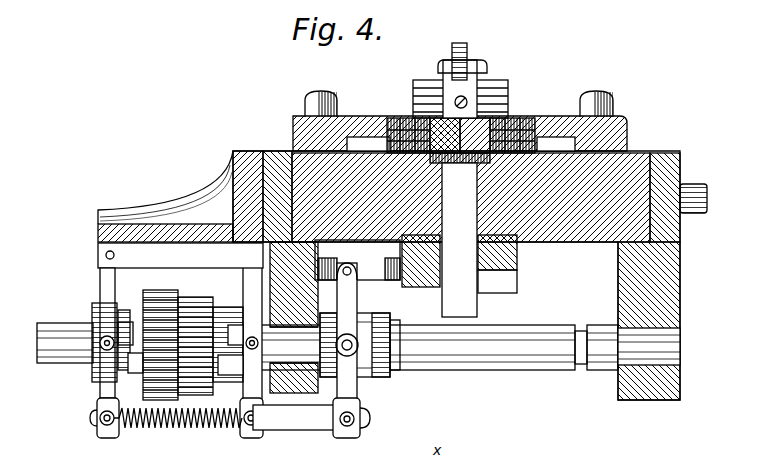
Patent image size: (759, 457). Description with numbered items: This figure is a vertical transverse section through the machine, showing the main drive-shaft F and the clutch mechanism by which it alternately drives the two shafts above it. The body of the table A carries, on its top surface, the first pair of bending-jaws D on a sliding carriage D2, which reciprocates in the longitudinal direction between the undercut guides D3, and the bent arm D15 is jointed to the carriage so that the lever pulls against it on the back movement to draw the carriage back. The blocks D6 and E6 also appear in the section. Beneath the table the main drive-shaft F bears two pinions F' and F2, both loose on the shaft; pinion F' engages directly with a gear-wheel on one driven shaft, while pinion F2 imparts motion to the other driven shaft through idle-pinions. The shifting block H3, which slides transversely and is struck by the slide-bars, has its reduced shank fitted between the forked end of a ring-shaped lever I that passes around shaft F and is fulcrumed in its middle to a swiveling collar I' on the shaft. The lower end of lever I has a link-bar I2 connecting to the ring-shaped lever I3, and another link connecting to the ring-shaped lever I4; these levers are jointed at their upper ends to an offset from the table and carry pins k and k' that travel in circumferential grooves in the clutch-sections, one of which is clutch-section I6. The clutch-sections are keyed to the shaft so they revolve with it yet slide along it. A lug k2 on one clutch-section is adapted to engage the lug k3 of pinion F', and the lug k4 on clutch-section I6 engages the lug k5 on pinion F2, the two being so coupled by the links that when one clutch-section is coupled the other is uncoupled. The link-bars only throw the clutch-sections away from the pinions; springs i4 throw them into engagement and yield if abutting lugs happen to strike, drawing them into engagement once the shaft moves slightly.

The casing / frame body A is at (402, 275).
The bending-jaws D is at (461, 217).
The sliding carriage D2 is at (508, 81).
The undercut guides D3 is at (352, 107).
The block D6 is at (421, 261).
The bent arm D15 is at (467, 48).
The block E6 is at (497, 264).
The main drive-shaft F is at (461, 360).
The pinion F' is at (195, 336).
The pinion F2 is at (160, 337).
The shifting block H3 is at (357, 260).
The ring-shaped lever I is at (355, 331).
The swiveling collar I' is at (386, 361).
The link-bar I2 is at (311, 418).
The ring-shaped lever I3 is at (270, 446).
The ring-shaped lever I4 is at (106, 438).
The clutch-section I6 is at (180, 320).
The springs i4 is at (195, 428).
The pin k is at (288, 317).
The pin k' is at (77, 342).
The lug k2 is at (228, 344).
The lug k3 is at (230, 365).
The lug k4 is at (125, 340).
The lug k5 is at (132, 373).